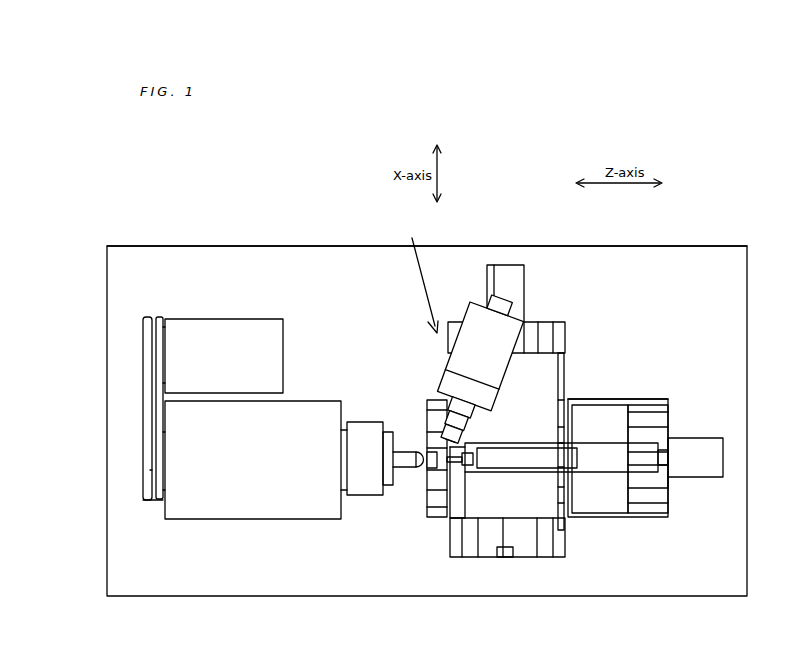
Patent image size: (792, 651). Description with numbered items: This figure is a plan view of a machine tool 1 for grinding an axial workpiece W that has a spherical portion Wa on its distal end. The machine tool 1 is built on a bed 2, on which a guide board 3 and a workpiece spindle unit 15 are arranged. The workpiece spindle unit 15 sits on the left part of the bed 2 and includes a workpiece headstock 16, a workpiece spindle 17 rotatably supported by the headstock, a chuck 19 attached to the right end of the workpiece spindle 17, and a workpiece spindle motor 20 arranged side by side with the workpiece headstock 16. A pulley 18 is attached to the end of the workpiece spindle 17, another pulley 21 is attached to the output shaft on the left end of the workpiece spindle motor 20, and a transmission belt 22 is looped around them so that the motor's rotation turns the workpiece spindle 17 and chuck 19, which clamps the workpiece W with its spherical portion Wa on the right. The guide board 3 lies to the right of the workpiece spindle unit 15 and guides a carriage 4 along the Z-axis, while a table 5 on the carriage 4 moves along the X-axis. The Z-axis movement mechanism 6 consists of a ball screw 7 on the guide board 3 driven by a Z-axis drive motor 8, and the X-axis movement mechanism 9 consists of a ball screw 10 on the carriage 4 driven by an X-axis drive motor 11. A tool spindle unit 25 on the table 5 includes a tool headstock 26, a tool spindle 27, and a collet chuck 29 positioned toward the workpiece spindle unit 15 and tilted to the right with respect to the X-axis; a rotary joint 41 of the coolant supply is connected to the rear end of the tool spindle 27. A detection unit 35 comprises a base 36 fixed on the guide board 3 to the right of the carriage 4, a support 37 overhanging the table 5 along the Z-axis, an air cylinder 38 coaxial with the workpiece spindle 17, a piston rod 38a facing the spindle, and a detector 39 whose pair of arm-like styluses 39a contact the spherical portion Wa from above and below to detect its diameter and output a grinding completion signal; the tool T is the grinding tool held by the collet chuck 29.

The machine tool 1 is at (180, 198).
The bed 2 is at (688, 253).
The guide board 3 is at (668, 400).
The carriage 4 is at (556, 340).
The table 5 is at (562, 353).
The Z-axis movement mechanism 6 is at (682, 488).
The ball screw 7 is at (658, 450).
The Z-axis drive motor 8 is at (723, 452).
The X-axis movement mechanism 9 is at (545, 290).
The ball screw 10 is at (508, 535).
The X-axis drive motor 11 is at (508, 265).
The workpiece spindle unit 15 is at (135, 505).
The workpiece headstock 16 is at (256, 519).
The workpiece spindle 17 is at (341, 520).
The pulley 18 is at (148, 457).
The chuck 19 is at (370, 495).
The workpiece spindle motor 20 is at (236, 330).
The pulley 21 is at (143, 345).
The transmission belt 22 is at (150, 412).
The tool spindle unit 25 is at (447, 365).
The tool headstock 26 is at (419, 277).
The tool spindle 27 is at (441, 396).
The collet chuck 29 is at (433, 408).
The detection unit 35 is at (593, 525).
The base 36 is at (628, 508).
The support 37 is at (606, 472).
The air cylinder 38 is at (545, 472).
The piston rod 38a is at (478, 472).
The detector 39 is at (463, 522).
The styluses 39a is at (447, 520).
The rotary joint 41 is at (492, 297).
The tool T is at (425, 418).
The workpiece W is at (401, 467).
The spherical portion Wa is at (419, 467).